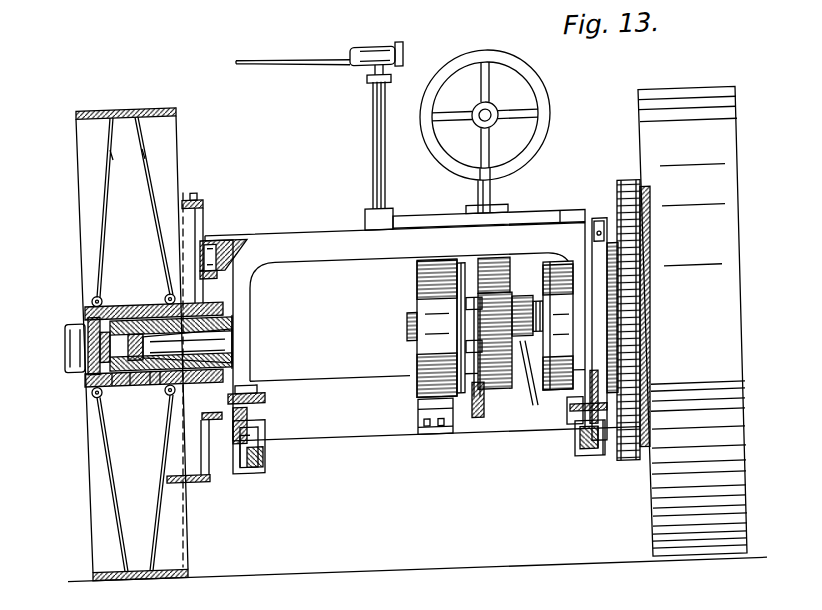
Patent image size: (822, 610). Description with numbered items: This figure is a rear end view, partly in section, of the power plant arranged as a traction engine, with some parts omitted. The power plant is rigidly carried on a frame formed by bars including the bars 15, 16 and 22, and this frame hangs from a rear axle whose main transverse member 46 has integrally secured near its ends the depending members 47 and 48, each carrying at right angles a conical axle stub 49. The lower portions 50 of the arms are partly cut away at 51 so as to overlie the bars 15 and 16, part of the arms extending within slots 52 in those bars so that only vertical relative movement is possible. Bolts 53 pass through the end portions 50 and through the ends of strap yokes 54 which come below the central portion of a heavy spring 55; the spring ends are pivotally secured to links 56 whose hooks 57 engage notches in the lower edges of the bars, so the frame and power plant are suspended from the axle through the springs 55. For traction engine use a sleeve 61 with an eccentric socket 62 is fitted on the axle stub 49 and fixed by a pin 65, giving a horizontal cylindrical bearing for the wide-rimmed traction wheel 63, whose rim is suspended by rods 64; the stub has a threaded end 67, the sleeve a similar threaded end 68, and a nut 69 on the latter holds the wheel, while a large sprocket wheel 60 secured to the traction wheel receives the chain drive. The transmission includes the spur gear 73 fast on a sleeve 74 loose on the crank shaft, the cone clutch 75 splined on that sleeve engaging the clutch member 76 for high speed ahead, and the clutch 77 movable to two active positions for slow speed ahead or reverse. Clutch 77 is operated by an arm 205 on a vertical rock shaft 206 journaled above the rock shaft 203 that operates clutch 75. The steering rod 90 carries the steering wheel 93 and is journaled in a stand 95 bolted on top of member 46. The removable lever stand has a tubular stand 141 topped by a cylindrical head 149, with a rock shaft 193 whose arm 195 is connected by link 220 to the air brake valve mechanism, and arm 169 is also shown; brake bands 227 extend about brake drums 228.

The frame bar 15 is at (268, 430).
The frame bar 16 is at (650, 419).
The frame bar 22 is at (365, 431).
The main transverse member 46 is at (346, 255).
The depending member 47 is at (240, 336).
The depending member 48 is at (643, 345).
The axle stub 49 is at (230, 327).
The lower portion 50 is at (255, 392).
The cut-away 51 is at (567, 429).
The slot 52 is at (253, 388).
The bolt 53 is at (272, 398).
The strap yoke 54 is at (258, 468).
The spring 55 is at (250, 462).
The link 56 is at (580, 426).
The hook 57 is at (608, 432).
The sprocket wheel 60 is at (200, 190).
The sleeve 61 is at (122, 376).
The socket 62 is at (152, 298).
The traction wheel 63 is at (103, 98).
The rod 64 is at (142, 141).
The pin 65 is at (155, 377).
The threaded end 67 is at (112, 297).
The threaded end 68 is at (82, 356).
The nut 69 is at (72, 335).
The spur gear 73 is at (497, 280).
The sleeve 74 is at (515, 399).
The clutch 75 is at (475, 406).
The clutch member 76 is at (465, 407).
The clutch 77 is at (532, 405).
The rod 90 is at (486, 121).
The steering wheel 93 is at (527, 77).
The stand 95 is at (480, 190).
The tubular stand 141 is at (370, 116).
The cylindrical head 149 is at (407, 48).
The arm 169 is at (280, 54).
The rock shaft 193 is at (375, 141).
The arm 195 is at (372, 221).
The rock shaft 203 is at (488, 440).
The arm 205 is at (515, 301).
The rock shaft 206 is at (478, 265).
The link 220 is at (430, 217).
The brake band 227 is at (213, 414).
The brake drum 228 is at (243, 234).